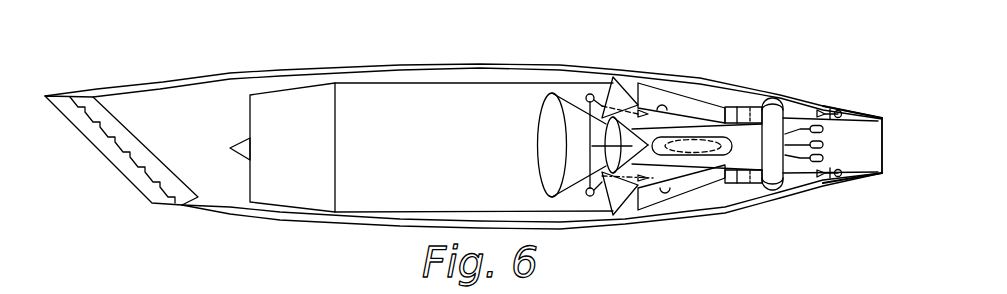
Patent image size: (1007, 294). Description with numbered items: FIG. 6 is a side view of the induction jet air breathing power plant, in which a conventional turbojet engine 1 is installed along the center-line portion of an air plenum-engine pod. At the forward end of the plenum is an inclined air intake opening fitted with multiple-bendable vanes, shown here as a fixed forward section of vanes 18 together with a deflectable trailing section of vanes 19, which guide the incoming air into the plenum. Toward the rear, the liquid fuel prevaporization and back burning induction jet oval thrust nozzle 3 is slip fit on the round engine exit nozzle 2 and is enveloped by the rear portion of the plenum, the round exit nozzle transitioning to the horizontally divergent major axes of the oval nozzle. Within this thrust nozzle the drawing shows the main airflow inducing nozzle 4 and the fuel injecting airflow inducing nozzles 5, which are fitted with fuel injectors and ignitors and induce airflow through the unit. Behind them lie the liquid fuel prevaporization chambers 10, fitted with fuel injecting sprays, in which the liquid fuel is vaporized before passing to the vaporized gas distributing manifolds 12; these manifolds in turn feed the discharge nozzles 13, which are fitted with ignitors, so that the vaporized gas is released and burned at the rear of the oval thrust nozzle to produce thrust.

The conventional turbojet engine 1 is at (421, 147).
The engine exit nozzle 2 is at (732, 108).
The oval thrust nozzle 3 is at (883, 130).
The main airflow inducing nozzle 4 is at (568, 107).
The fuel injecting airflow inducing nozzles 5 is at (605, 115).
The liquid fuel prevaporization chambers 10 is at (803, 112).
The vaporized gas distributing manifolds 12 is at (770, 107).
The discharge nozzles 13 is at (823, 143).
The fixed forward section of vanes 18 is at (123, 168).
The deflectable trailing section of vanes 19 is at (125, 135).